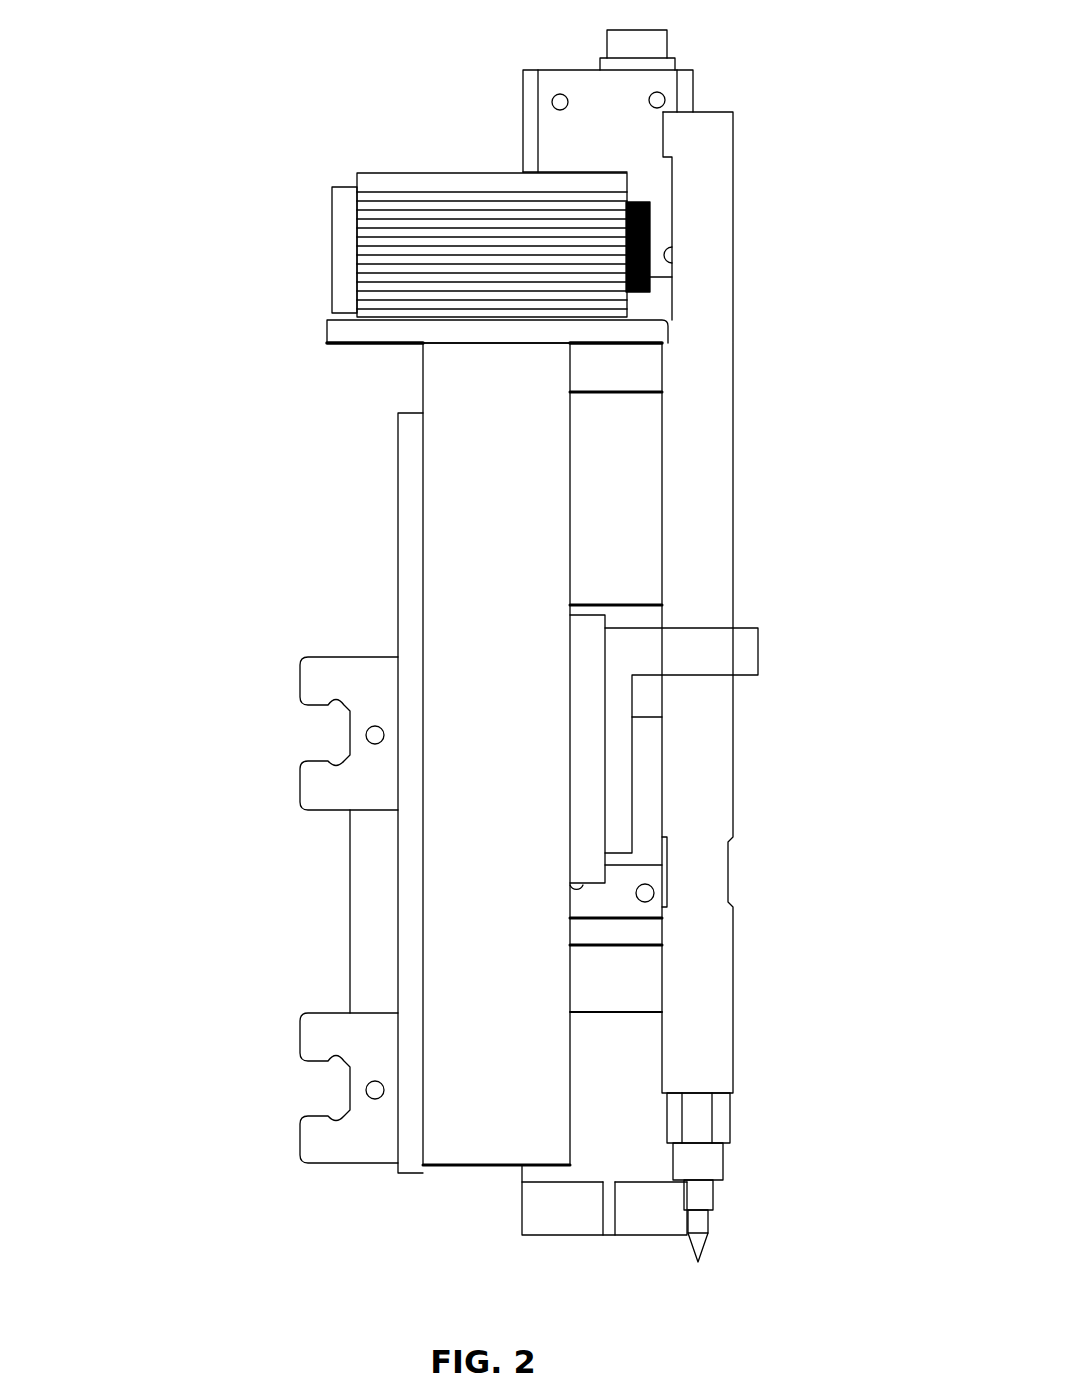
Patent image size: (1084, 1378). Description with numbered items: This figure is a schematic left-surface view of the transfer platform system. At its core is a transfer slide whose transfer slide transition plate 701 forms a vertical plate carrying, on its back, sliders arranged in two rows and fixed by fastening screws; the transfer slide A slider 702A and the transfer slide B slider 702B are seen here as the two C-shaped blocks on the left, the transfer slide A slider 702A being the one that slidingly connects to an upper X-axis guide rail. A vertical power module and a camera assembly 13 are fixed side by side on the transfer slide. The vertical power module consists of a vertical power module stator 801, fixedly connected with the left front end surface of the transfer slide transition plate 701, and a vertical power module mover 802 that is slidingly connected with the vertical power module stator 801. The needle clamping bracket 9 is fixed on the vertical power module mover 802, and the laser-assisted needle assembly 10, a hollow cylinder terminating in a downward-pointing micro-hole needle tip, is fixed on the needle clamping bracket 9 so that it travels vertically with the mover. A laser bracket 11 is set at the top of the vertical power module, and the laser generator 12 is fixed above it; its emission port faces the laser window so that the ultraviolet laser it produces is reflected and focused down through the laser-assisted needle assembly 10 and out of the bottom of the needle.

The needle clamping bracket 9 is at (721, 630).
The laser-assisted needle assembly 10 is at (751, 687).
The laser bracket 11 is at (585, 275).
The laser generator 12 is at (592, 215).
The camera assembly 13 is at (688, 91).
The transfer slide transition plate 701 is at (250, 793).
The transfer slide A slider 702A is at (237, 743).
The transfer slide B slider 702B is at (237, 1020).
The vertical power module stator 801 is at (669, 754).
The vertical power module mover 802 is at (745, 702).